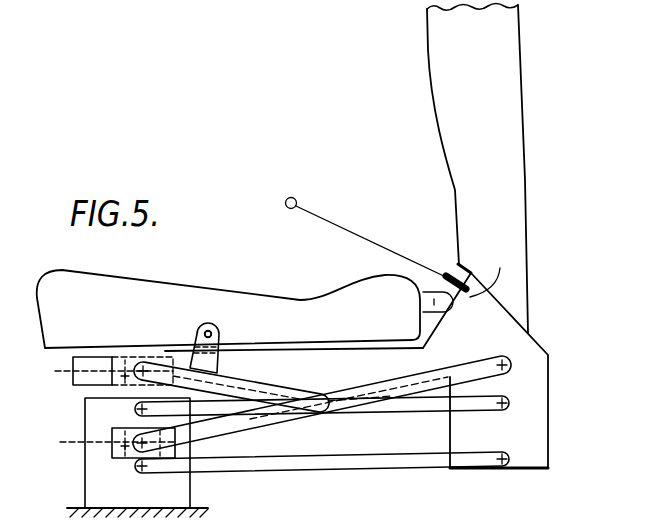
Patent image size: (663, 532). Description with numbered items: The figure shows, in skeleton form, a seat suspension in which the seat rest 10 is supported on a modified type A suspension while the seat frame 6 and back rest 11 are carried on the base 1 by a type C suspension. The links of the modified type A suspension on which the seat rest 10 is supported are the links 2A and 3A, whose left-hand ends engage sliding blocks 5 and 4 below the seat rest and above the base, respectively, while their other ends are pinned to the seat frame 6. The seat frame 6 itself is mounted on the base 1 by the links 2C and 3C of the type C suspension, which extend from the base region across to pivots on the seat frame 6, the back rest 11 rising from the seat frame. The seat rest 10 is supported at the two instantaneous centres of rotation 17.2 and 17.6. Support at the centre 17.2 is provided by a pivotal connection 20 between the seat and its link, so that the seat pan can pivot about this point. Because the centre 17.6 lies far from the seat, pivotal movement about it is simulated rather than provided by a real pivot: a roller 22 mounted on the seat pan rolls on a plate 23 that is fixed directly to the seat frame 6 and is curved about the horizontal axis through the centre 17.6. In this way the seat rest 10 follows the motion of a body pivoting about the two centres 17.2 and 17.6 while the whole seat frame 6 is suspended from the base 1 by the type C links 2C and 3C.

The base part 1 is at (143, 500).
The link of modified type A suspension 2A is at (263, 395).
The link of type C suspension 2C is at (387, 408).
The link of modified type A suspension 3A is at (250, 421).
The link of type C suspension 3C is at (378, 463).
The lower slide block 4 is at (105, 443).
The upper slide block 5 is at (104, 372).
The seat frame 6 is at (491, 340).
The seat rest 10 is at (92, 322).
The back rest 11 is at (493, 62).
The instantaneous centre of rotation 17.2 is at (212, 332).
The instantaneous centre of rotation 17.6 is at (296, 199).
The pivotal connection 20 is at (204, 327).
The roller 22 is at (446, 279).
The plate 23 is at (493, 270).